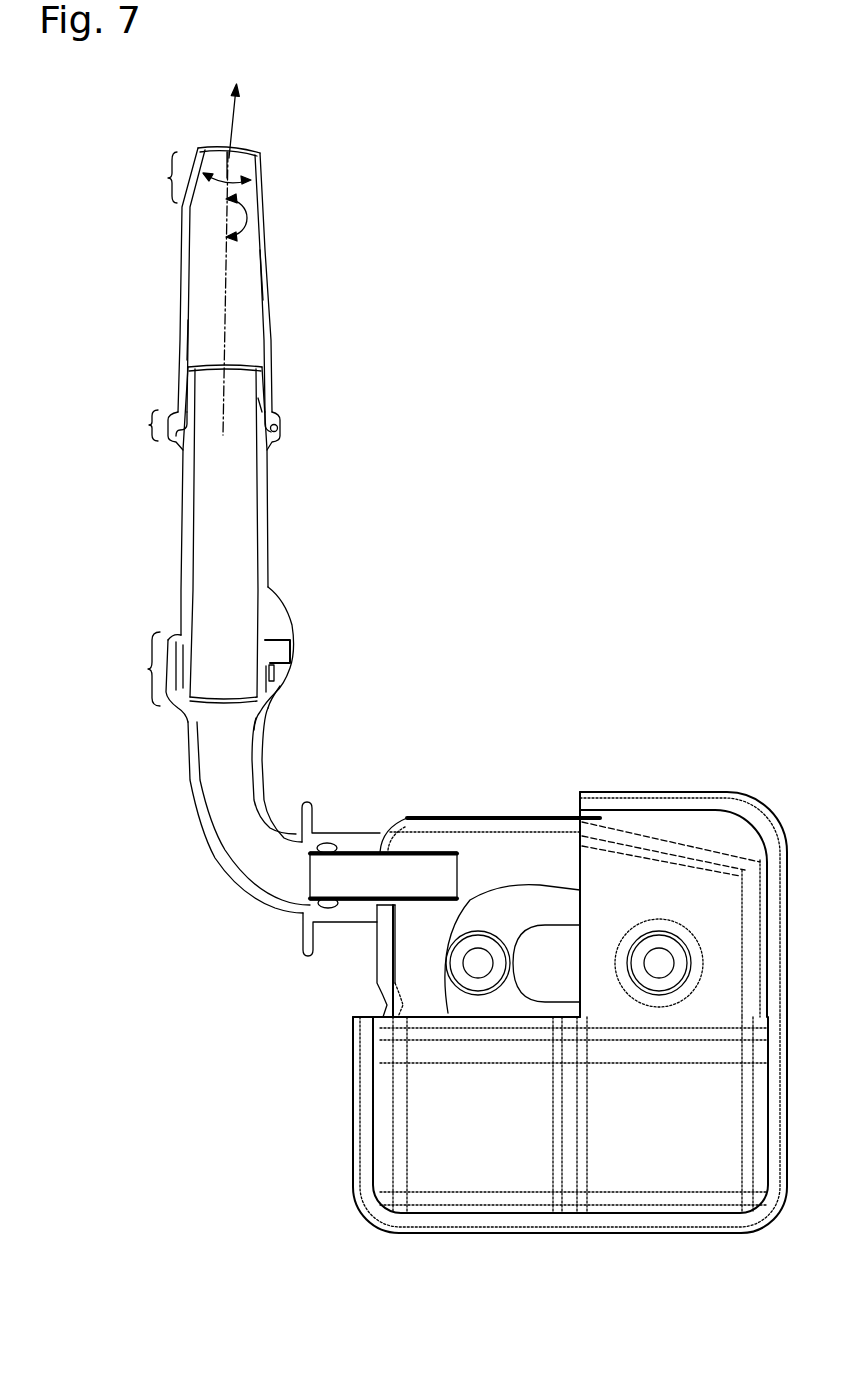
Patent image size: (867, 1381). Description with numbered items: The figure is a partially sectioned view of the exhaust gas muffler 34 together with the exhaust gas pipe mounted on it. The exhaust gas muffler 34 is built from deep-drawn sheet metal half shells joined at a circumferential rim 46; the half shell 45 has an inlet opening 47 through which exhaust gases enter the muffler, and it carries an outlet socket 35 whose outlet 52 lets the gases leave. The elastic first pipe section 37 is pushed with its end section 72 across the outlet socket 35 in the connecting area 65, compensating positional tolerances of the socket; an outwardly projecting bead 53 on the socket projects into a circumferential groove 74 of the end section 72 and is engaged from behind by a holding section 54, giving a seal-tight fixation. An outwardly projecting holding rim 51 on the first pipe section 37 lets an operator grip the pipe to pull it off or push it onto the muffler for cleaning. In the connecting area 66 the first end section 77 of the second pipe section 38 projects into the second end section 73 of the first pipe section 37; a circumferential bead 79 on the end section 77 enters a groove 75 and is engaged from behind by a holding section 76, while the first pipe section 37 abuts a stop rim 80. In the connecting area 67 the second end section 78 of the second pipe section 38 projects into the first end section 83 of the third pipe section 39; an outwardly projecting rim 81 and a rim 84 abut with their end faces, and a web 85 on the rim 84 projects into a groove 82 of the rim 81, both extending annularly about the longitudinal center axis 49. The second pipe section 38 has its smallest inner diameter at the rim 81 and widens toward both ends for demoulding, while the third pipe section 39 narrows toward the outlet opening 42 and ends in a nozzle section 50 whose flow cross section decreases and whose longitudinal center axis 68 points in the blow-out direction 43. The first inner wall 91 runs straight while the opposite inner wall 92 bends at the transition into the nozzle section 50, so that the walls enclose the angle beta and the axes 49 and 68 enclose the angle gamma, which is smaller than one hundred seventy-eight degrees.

The exhaust gas muffler 34 is at (351, 1140).
The outlet socket 35 is at (403, 817).
The first pipe section 37 is at (197, 807).
The second pipe section 38 is at (182, 550).
The third pipe section 39 is at (180, 285).
The outlet opening 42 is at (219, 147).
The blow-out direction 43 is at (246, 121).
The second half shell 45 is at (473, 816).
The circumferential rim 46 is at (668, 798).
The inlet opening 47 is at (550, 950).
The longitudinal center axis 49 is at (226, 328).
The nozzle section 50 is at (155, 177).
The holding rim 51 is at (303, 945).
The outlet 52 is at (310, 870).
The bead 53 is at (327, 908).
The holding section 54 is at (357, 845).
The connecting area 65 is at (351, 924).
The connecting area 66 is at (138, 669).
The connecting area 67 is at (140, 425).
The longitudinal center axis 68 is at (227, 172).
The end section 72 is at (338, 847).
The second end section 73 is at (291, 660).
The circumferential groove 74 is at (325, 843).
The groove 75 is at (277, 676).
The holding section 76 is at (274, 650).
The first end section 77 is at (183, 658).
The second end section 78 is at (260, 405).
The bead 79 is at (275, 686).
The stop rim 80 is at (175, 633).
The rim 81 is at (173, 440).
The groove 82 is at (273, 441).
The first end section 83 is at (278, 417).
The rim 84 is at (173, 413).
The web 85 is at (279, 428).
The first inner wall 91 is at (257, 281).
The inner wall 92 is at (203, 330).